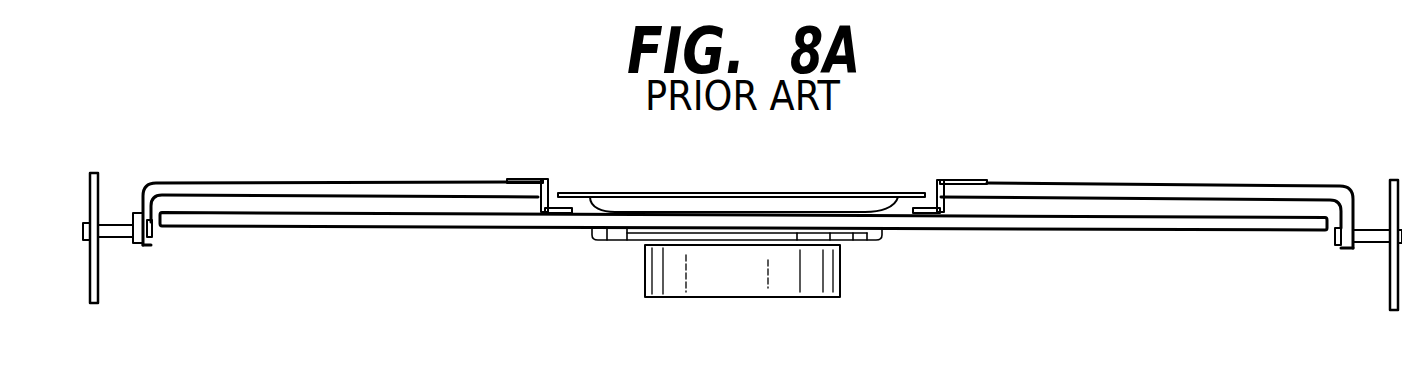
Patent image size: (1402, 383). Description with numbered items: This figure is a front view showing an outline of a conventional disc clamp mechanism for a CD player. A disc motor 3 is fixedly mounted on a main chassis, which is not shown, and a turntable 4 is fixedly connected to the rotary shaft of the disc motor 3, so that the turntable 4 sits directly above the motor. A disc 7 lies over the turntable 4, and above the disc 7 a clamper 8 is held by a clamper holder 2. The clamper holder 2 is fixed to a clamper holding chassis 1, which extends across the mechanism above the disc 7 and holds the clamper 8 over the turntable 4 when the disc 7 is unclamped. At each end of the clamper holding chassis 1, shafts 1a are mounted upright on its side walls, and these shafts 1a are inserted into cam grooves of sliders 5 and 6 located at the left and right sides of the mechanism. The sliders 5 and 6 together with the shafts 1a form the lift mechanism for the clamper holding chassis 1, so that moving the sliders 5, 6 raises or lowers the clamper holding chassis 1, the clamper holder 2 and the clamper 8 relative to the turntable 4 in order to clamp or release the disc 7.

The clamper holding chassis 1 is at (362, 183).
The shaft 1a is at (113, 222).
The clamper holder 2 is at (546, 179).
The disc motor 3 is at (830, 274).
The turntable 4 is at (883, 236).
The slider 5 is at (93, 280).
The slider 6 is at (1390, 290).
The disc 7 is at (472, 228).
The clamper 8 is at (838, 195).